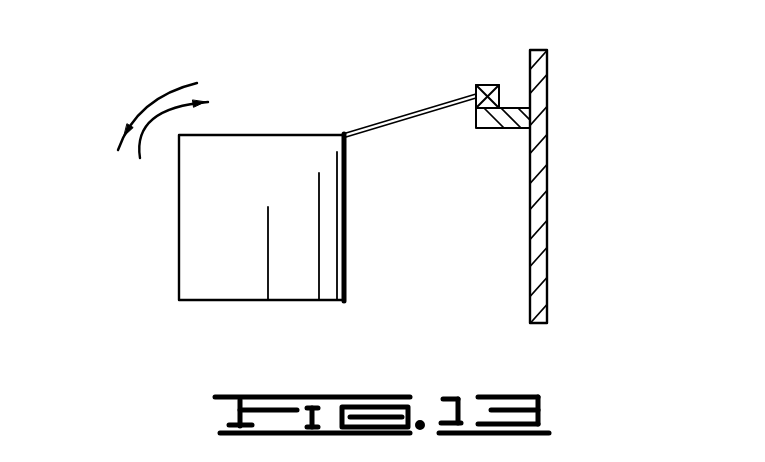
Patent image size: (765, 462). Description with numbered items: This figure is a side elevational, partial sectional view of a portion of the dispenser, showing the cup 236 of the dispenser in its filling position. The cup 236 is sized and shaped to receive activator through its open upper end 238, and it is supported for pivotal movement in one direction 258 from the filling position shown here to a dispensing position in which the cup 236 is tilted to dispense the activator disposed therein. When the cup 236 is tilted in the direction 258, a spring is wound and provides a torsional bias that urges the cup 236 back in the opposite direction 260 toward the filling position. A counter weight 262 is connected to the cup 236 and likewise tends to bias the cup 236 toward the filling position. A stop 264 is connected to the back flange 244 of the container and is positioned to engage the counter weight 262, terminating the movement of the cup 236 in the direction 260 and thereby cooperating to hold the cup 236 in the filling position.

The cup 236 is at (332, 243).
The open upper end 238 is at (267, 133).
The back flange 244 is at (547, 63).
The direction 258 is at (162, 92).
The direction 260 is at (143, 112).
The counter weight 262 is at (490, 85).
The stop 264 is at (498, 122).